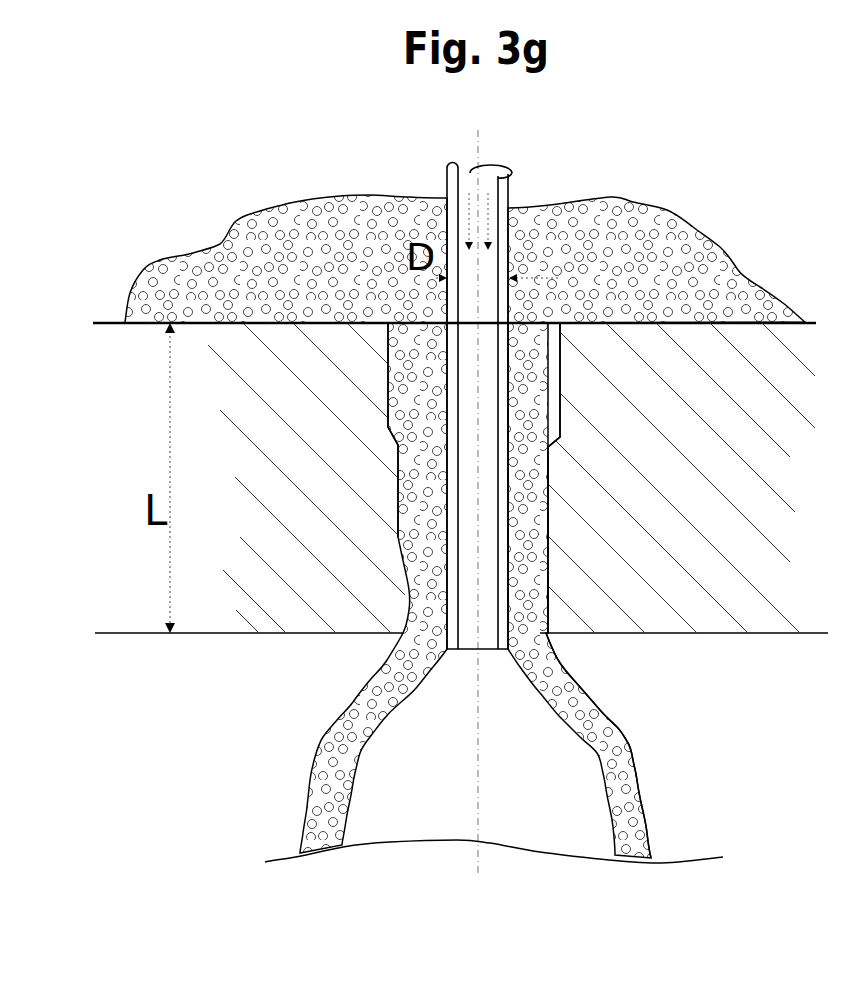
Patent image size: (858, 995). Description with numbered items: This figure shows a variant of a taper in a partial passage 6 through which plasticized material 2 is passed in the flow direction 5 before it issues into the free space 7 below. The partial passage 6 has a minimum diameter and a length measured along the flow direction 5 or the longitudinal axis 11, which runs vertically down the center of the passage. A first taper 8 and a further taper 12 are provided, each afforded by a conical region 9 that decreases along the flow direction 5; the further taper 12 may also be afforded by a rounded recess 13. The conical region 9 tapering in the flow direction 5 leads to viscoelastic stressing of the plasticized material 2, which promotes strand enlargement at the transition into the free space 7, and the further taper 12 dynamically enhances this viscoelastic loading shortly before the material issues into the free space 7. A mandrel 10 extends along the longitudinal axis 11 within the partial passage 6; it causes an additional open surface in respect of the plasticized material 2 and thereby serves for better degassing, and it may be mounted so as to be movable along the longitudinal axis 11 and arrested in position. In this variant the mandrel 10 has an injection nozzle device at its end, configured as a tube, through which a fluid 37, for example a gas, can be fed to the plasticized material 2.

The plasticized material 2 is at (600, 248).
The flow direction 5 is at (83, 415).
The partial passage 6 is at (560, 330).
The free space 7 is at (289, 721).
The first taper 8 is at (555, 448).
The conical region 9 is at (555, 448).
The mandrel 10 is at (555, 448).
The longitudinal axis 11 is at (478, 330).
The further taper 12 is at (560, 568).
The rounded recess 13 is at (560, 568).
The fluid 37 is at (470, 213).